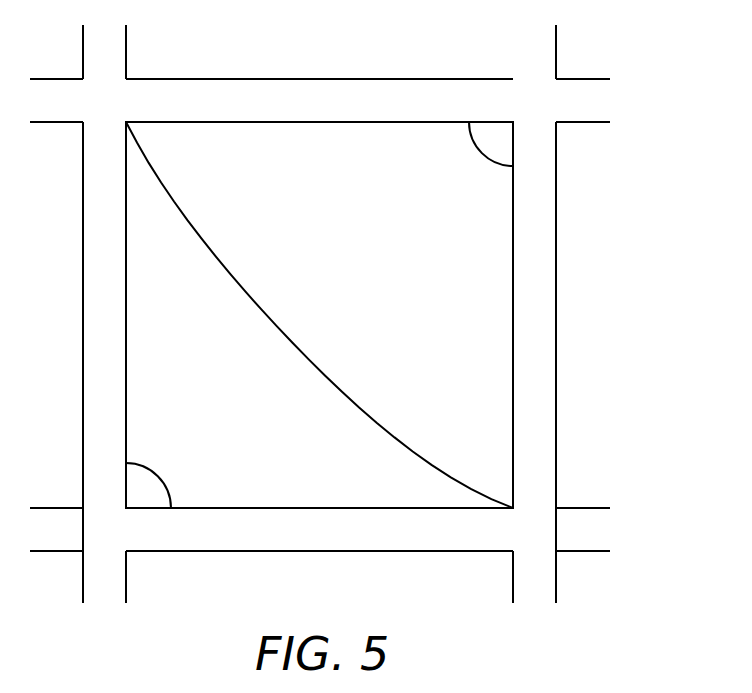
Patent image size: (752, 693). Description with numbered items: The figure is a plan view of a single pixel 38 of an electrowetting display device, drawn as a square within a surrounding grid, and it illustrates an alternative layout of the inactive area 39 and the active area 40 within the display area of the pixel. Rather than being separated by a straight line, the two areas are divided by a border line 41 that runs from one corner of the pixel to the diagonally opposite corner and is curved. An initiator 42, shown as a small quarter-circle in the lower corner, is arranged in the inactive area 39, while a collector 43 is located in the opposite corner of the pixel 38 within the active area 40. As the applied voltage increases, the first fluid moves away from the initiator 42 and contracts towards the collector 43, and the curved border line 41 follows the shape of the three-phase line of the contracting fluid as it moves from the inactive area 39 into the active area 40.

The pixel 38 is at (335, 32).
The inactive area 39 is at (318, 492).
The active area 40 is at (495, 405).
The border line 41 is at (468, 483).
The initiator 42 is at (149, 497).
The collector 43 is at (492, 133).